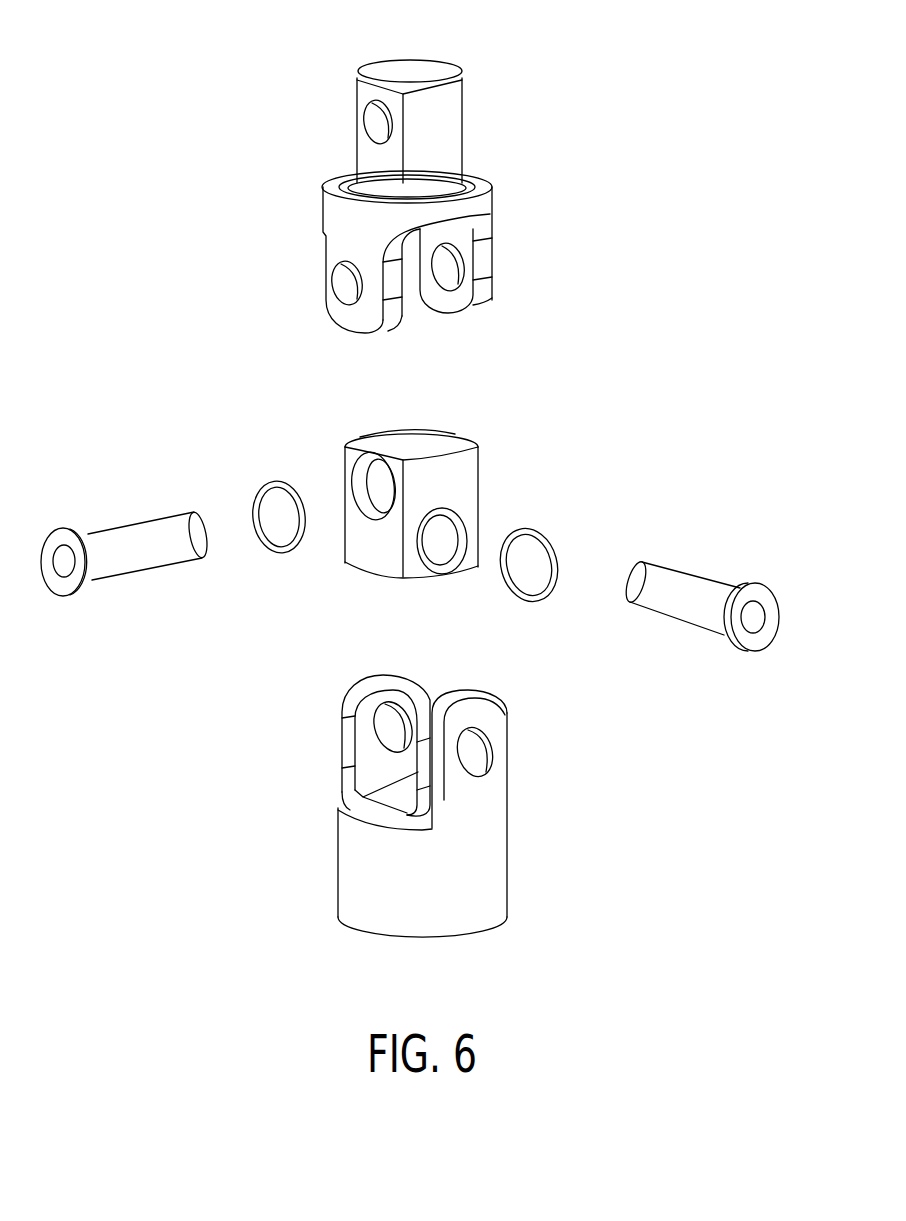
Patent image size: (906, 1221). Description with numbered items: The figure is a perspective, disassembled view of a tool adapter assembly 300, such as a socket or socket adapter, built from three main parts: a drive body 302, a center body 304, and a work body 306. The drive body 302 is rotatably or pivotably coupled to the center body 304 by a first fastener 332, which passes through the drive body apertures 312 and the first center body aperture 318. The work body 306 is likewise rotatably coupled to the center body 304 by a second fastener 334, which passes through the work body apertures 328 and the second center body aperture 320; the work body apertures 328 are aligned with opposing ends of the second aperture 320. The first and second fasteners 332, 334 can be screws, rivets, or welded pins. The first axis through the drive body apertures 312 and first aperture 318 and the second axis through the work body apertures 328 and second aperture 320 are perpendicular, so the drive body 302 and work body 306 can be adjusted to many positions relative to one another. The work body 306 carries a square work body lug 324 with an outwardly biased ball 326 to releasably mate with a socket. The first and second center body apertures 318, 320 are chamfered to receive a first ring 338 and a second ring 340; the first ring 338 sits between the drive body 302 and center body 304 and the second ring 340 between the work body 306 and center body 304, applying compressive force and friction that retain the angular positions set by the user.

The tool adapter assembly 300 is at (175, 110).
The drive body 302 is at (525, 875).
The center body 304 is at (487, 477).
The work body 306 is at (505, 224).
The drive body apertures 312 is at (500, 763).
The first center body aperture 318 is at (457, 532).
The second center body aperture 320 is at (362, 472).
The work body lug 324 is at (457, 150).
The outwardly biased ball 326 is at (377, 118).
The work body apertures 328 is at (343, 285).
The first fastener 332 is at (665, 585).
The second fastener 334 is at (152, 523).
The first ring 338 is at (525, 602).
The second ring 340 is at (263, 542).